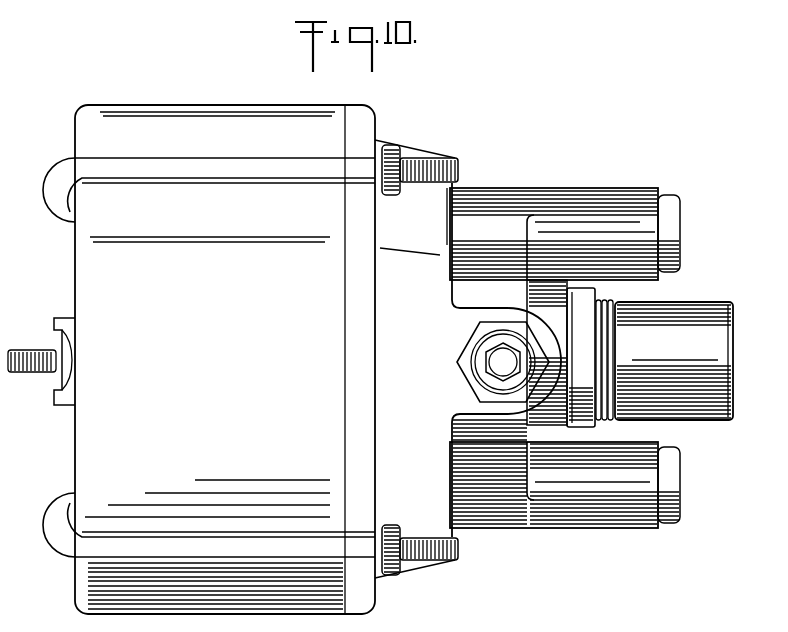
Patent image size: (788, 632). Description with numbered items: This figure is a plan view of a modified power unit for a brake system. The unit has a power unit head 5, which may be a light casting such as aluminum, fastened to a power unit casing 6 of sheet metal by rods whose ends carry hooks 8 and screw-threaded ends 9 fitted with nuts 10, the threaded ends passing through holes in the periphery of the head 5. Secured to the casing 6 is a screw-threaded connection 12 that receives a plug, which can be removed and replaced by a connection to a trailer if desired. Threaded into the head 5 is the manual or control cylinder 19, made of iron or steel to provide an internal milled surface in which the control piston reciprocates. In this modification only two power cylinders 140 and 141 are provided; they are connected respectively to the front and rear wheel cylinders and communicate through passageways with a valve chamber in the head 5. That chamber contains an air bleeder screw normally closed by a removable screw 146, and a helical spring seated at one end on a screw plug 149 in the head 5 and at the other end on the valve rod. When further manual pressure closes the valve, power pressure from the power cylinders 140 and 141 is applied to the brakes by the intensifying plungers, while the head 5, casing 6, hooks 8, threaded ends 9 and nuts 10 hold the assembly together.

The power unit head 5 is at (418, 320).
The power unit casing 6 is at (212, 320).
The hooks 8 is at (58, 178).
The screw-threaded ends 9 is at (450, 158).
The nuts 10 is at (396, 146).
The connection 12 is at (62, 318).
The manual or control cylinder 19 is at (716, 302).
The power cylinder 140 is at (617, 193).
The power cylinder 141 is at (607, 522).
The removable screw 146 is at (510, 369).
The screw plug 149 is at (497, 340).